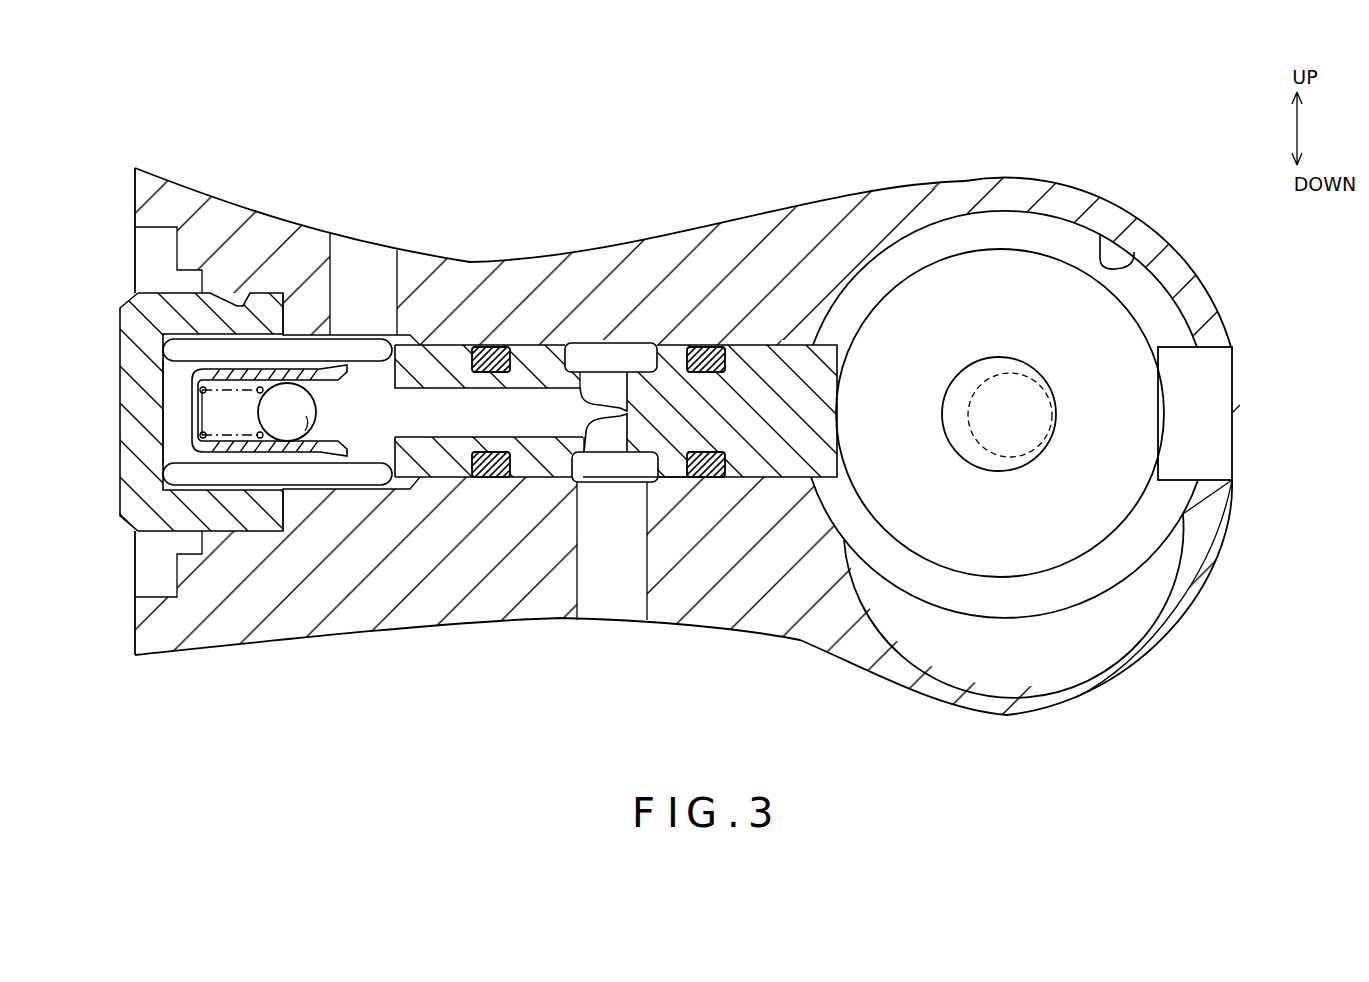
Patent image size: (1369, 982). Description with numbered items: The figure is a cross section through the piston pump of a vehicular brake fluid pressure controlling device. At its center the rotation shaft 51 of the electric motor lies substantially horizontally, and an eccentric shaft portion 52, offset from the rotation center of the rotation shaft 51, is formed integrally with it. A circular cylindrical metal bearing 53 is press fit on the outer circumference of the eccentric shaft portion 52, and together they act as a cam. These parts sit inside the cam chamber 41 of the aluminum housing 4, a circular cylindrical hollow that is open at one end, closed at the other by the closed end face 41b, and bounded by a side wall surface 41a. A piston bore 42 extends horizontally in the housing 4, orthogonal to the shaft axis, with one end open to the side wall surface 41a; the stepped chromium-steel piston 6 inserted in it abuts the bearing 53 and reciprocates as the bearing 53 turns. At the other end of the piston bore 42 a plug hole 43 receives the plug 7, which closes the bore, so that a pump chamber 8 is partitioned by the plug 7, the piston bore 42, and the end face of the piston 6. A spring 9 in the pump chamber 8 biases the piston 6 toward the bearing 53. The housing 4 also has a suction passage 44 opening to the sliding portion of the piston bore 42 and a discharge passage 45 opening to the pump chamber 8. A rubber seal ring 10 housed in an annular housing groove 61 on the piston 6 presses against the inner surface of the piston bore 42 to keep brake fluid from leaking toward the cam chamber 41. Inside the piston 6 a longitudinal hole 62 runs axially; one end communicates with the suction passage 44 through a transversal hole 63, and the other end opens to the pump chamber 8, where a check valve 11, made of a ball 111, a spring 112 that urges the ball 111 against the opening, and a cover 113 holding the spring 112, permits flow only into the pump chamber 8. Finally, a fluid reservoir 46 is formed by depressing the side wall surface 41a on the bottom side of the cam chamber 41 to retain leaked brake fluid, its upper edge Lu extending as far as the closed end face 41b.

The housing 4 is at (452, 592).
The piston 6 is at (588, 357).
The plug 7 is at (130, 378).
The pump chamber 8 is at (180, 412).
The spring 9 is at (160, 473).
The seal ring 10 is at (700, 483).
The check valve 11 is at (247, 562).
The ball 111 is at (285, 427).
The spring 112 is at (238, 433).
The cover 113 is at (210, 447).
The cam chamber 41 is at (1157, 327).
The side wall surface 41a is at (1133, 257).
The closed end face 41b is at (1004, 414).
The piston bore 42 is at (677, 483).
The plug hole 43 is at (275, 282).
The suction passage 44 is at (598, 603).
The discharge passage 45 is at (357, 273).
The fluid reservoir 46 is at (1107, 618).
The rotation shaft 51 is at (1005, 377).
The eccentric shaft portion 52 is at (990, 362).
The bearing 53 is at (917, 303).
The housing groove 61 is at (750, 345).
The longitudinal hole 62 is at (527, 413).
The transversal hole 63 is at (615, 390).
The upper edge Lu is at (1185, 517).